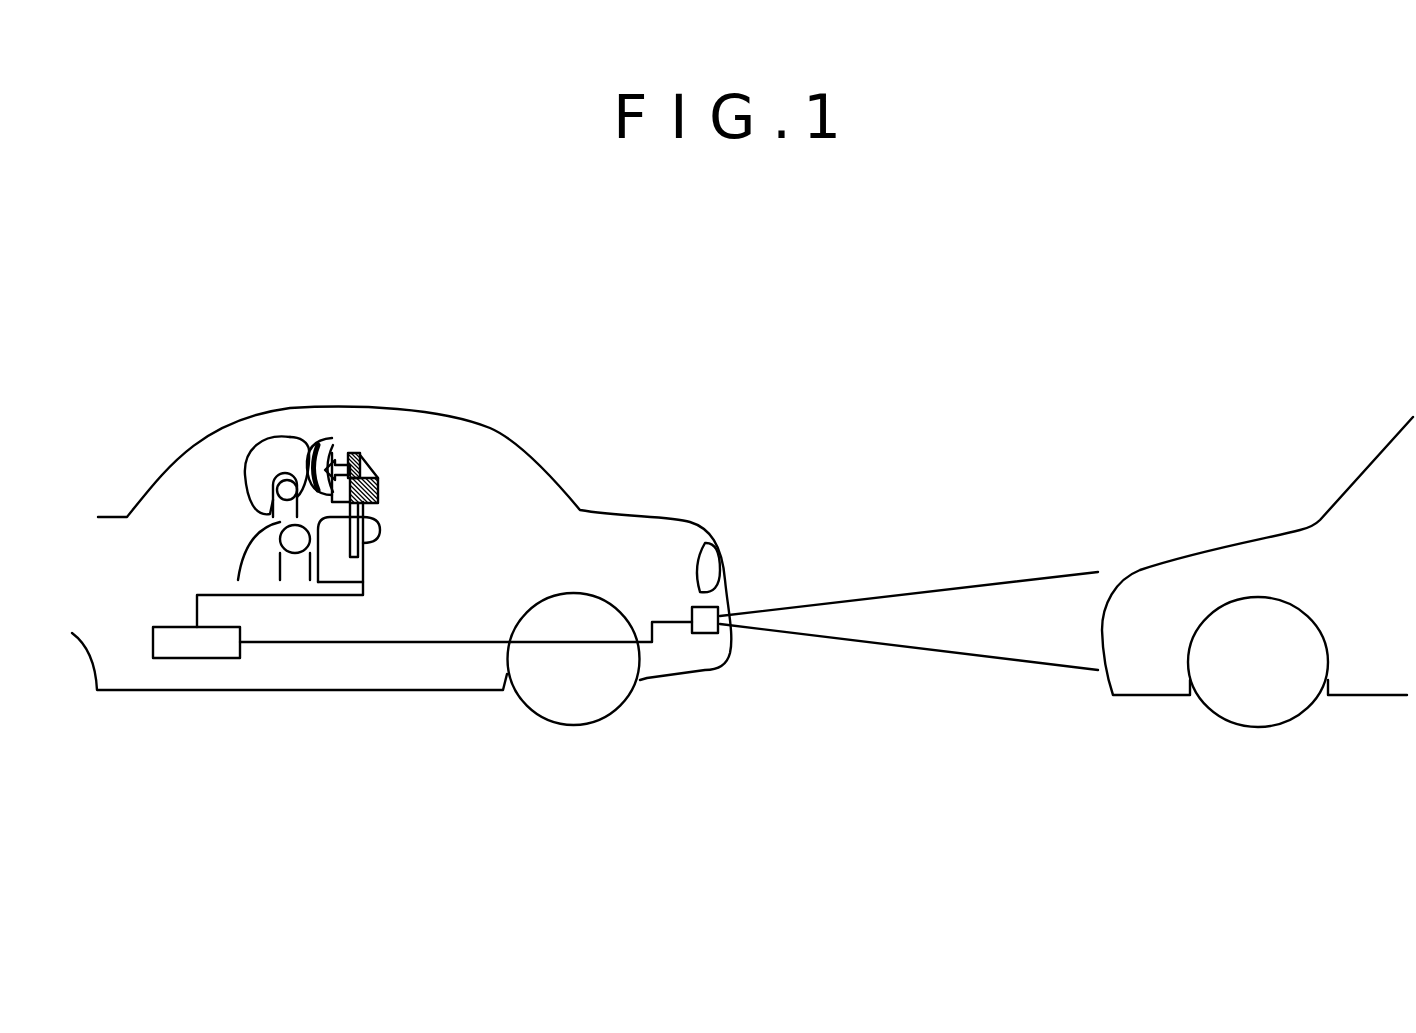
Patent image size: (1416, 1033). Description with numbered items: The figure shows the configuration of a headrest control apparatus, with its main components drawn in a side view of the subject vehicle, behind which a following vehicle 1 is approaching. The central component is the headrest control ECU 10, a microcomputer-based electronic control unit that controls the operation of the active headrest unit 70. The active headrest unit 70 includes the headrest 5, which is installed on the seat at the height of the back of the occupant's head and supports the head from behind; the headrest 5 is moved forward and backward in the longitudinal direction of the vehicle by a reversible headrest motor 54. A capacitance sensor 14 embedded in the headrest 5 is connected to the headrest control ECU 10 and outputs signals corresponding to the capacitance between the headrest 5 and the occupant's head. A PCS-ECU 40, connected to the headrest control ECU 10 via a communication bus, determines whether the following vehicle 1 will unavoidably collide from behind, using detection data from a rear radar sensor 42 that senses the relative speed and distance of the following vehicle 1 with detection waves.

The following vehicle 1 is at (1337, 490).
The headrest 5 is at (350, 450).
The headrest control ECU 10 is at (384, 488).
The capacitance sensor 14 is at (316, 452).
The PCS-ECU 40 is at (198, 658).
The rear radar sensor 42 is at (705, 633).
The headrest motor 54 is at (360, 458).
The active headrest unit 70 is at (356, 436).